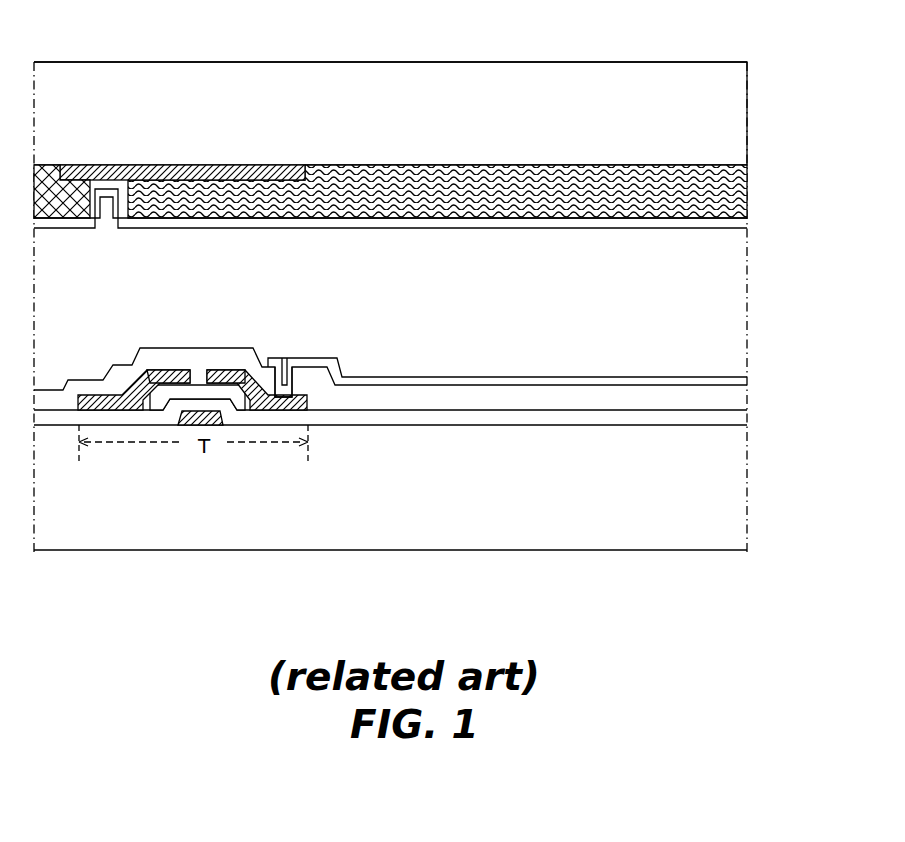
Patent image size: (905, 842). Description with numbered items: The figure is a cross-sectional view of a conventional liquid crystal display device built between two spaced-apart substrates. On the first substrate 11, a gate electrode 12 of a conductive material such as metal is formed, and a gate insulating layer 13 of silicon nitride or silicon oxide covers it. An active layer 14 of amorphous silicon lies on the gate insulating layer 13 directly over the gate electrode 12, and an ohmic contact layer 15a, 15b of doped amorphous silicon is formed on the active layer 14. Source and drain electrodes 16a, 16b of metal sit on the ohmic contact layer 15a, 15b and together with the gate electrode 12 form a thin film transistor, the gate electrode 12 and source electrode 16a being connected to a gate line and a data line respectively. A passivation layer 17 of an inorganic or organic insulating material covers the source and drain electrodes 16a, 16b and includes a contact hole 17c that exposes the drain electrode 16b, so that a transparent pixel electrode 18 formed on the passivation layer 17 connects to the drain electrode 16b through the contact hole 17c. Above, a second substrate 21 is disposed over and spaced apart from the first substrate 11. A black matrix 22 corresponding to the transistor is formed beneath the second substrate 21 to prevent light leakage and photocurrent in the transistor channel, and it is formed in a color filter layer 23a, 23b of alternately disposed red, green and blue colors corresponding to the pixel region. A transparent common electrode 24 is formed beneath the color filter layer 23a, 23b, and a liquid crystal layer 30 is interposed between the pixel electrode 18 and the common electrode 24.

The first substrate 11 is at (345, 518).
The gate electrode 12 is at (187, 422).
The gate insulating layer 13 is at (519, 412).
The active layer 14 is at (200, 388).
The ohmic contact layer 15a is at (143, 380).
The ohmic contact layer 15b is at (252, 370).
The source electrode 16a is at (168, 370).
The drain electrode 16b is at (230, 370).
The passivation layer 17 is at (92, 385).
The contact hole 17c is at (289, 351).
The pixel electrode 18 is at (407, 383).
The second substrate 21 is at (467, 100).
The black matrix 22 is at (195, 168).
The color filter layer 23a is at (372, 185).
The color filter layer 23b is at (47, 167).
The common electrode 24 is at (563, 226).
The liquid crystal layer 30 is at (698, 325).